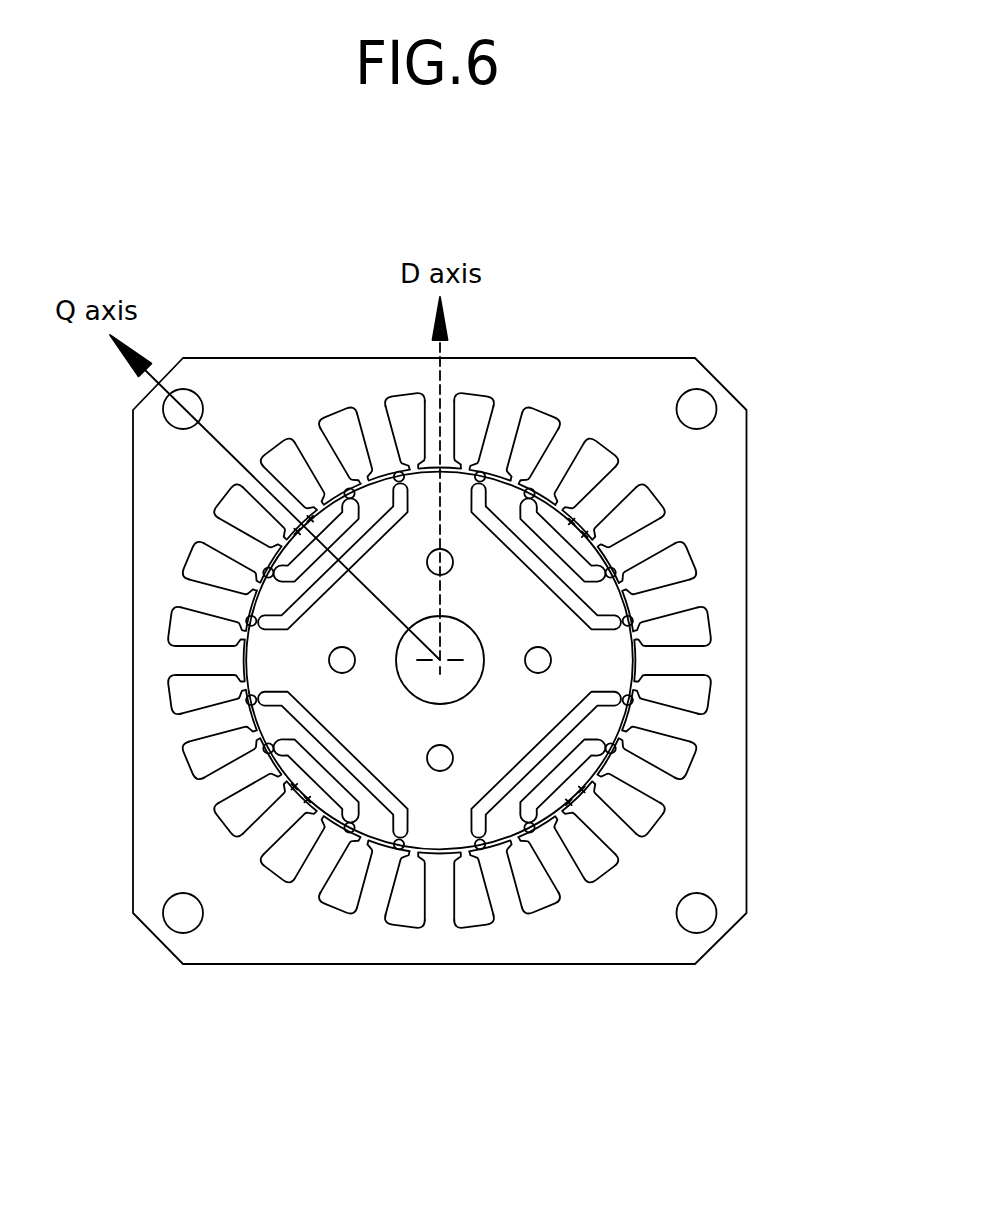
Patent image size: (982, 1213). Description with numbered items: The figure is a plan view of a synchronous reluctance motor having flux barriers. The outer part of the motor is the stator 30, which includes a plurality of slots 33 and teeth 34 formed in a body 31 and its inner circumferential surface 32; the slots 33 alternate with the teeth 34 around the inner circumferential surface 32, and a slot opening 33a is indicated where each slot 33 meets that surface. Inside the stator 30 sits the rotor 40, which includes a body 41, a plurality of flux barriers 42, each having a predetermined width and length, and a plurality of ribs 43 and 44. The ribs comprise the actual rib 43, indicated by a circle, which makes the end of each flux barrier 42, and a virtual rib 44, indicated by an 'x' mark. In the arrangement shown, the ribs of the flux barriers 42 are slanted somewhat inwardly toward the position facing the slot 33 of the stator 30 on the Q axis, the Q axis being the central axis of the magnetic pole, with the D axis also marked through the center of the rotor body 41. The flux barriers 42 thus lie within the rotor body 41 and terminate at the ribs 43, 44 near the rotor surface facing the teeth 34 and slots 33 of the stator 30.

The stator 30 is at (498, 631).
The body 31 is at (578, 380).
The inner circumferential surface 32 is at (507, 660).
The slots 33 is at (675, 750).
The slot openings 33a is at (628, 740).
The teeth 34 is at (653, 783).
The rotor 40 is at (447, 739).
The body 41 is at (437, 808).
The flux barriers 42 is at (290, 625).
The actual rib 43 is at (614, 571).
The virtual rib 44 is at (566, 521).